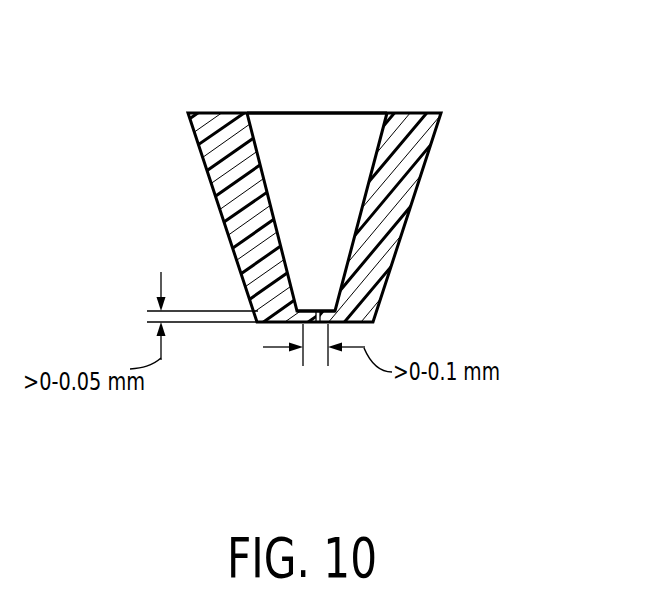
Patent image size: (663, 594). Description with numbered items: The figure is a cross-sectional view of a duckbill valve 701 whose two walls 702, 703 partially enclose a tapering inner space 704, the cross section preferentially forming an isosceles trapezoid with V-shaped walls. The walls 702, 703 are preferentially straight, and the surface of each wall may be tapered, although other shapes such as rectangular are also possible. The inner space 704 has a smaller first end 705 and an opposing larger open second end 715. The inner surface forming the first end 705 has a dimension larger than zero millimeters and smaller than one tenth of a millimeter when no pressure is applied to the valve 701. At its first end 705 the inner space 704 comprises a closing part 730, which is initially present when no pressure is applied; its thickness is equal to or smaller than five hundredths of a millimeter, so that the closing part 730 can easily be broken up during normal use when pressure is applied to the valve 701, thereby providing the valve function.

The valve 701 is at (528, 90).
The wall 702 is at (224, 224).
The wall 703 is at (405, 223).
The tapering inner space 704 is at (290, 132).
The first end 705 is at (285, 331).
The second end 715 is at (321, 99).
The closing part 730 is at (316, 341).